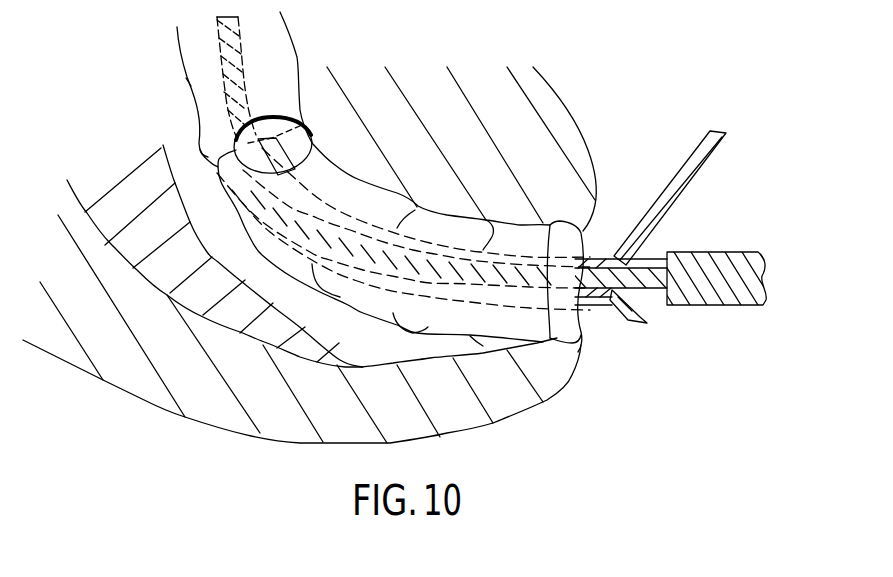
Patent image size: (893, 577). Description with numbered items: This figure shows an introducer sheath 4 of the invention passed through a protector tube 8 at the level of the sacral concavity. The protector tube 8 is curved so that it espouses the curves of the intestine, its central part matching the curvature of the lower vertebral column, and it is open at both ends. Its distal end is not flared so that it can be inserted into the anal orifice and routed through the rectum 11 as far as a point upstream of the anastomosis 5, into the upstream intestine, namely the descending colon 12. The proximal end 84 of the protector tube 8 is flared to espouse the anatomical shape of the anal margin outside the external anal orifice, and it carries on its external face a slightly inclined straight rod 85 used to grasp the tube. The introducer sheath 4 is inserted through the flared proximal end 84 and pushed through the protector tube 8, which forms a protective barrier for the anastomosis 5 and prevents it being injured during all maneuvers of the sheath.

The introducer sheath 4 is at (491, 239).
The anastomosis 5 is at (305, 121).
The protector tube 8 is at (418, 208).
The rectum 11 is at (477, 340).
The descending colon 12 is at (297, 43).
The proximal end of the protector tube 84 is at (625, 315).
The straight rod 85 is at (686, 172).